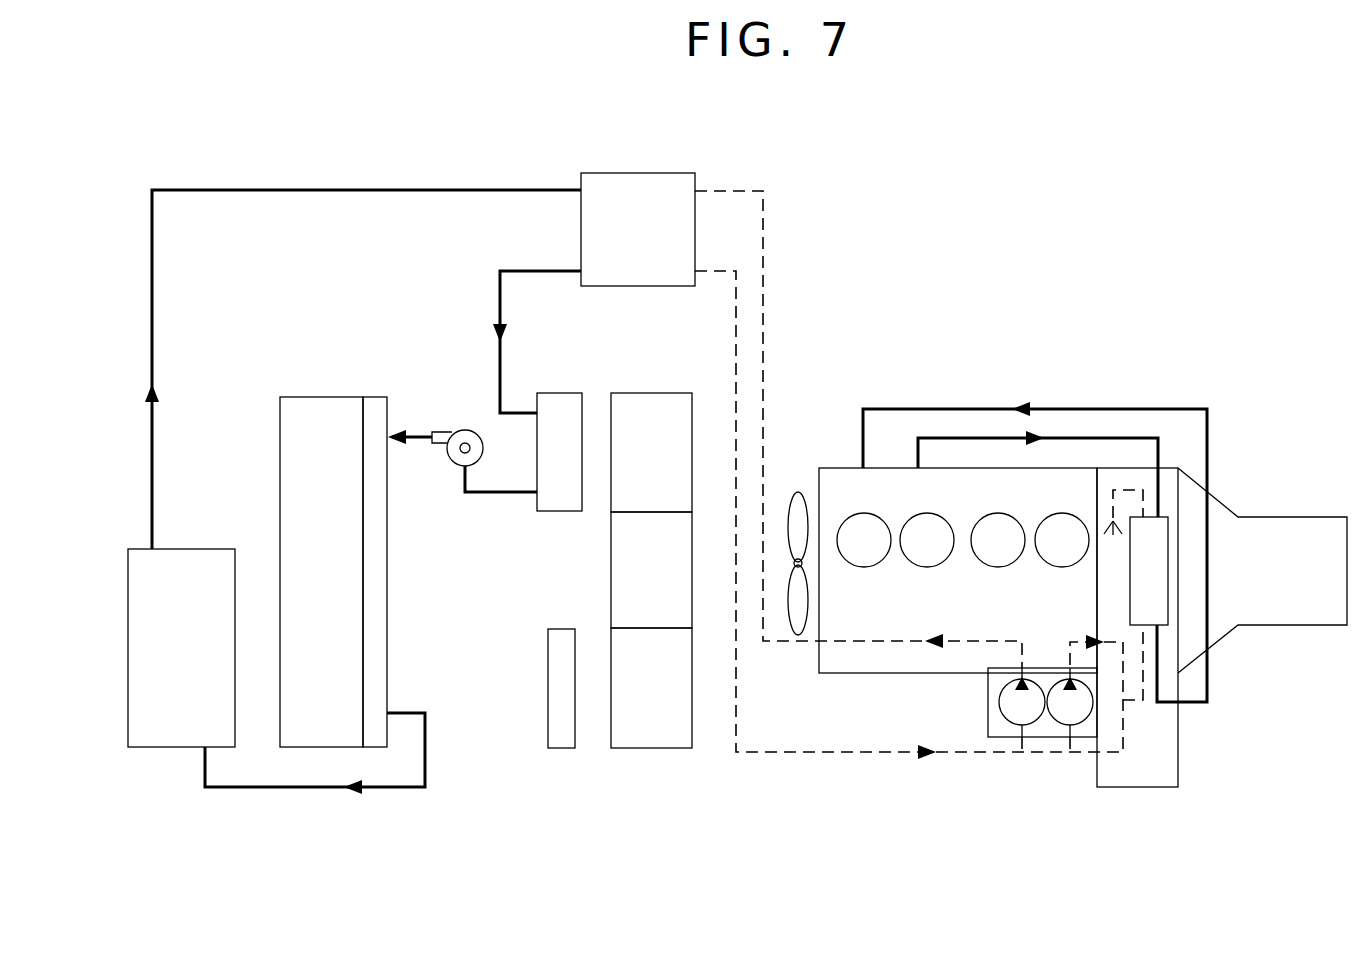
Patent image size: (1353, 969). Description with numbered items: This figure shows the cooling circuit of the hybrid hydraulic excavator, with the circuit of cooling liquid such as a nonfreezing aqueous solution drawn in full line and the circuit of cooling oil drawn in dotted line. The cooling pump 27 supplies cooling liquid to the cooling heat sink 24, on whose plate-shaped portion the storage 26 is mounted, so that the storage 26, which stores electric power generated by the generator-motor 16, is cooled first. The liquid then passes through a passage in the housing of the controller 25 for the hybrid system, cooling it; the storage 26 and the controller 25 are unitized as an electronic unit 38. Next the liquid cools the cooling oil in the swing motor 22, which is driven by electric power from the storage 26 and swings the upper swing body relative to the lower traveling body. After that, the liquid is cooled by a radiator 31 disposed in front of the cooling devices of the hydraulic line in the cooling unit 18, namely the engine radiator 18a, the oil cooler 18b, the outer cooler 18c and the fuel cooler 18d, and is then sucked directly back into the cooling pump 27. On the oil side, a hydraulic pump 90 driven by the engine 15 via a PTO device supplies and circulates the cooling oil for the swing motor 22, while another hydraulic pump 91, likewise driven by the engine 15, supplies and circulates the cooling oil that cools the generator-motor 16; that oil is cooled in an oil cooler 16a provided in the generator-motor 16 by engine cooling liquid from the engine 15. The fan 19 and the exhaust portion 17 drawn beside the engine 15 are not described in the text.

The engine 15 is at (843, 477).
The generator-motor 16 is at (1165, 760).
The oil cooler 16a is at (1160, 572).
The exhaust pipe 17 is at (1287, 525).
The cooling unit 18 is at (651, 524).
The engine radiator 18a is at (633, 465).
The oil cooler 18b is at (633, 582).
The outer cooler 18c is at (633, 702).
The fuel cooler 18d is at (553, 748).
The cooling fan 19 is at (797, 492).
The swing motor 22 is at (613, 185).
The cooling heat sink 24 is at (380, 604).
The controller 25 is at (181, 692).
The storage 26 is at (308, 747).
The cooling pump 27 is at (458, 420).
The radiator 31 is at (558, 511).
The electronic unit 38 is at (285, 636).
The hydraulic pump 90 is at (1031, 717).
The hydraulic pump 91 is at (1062, 717).